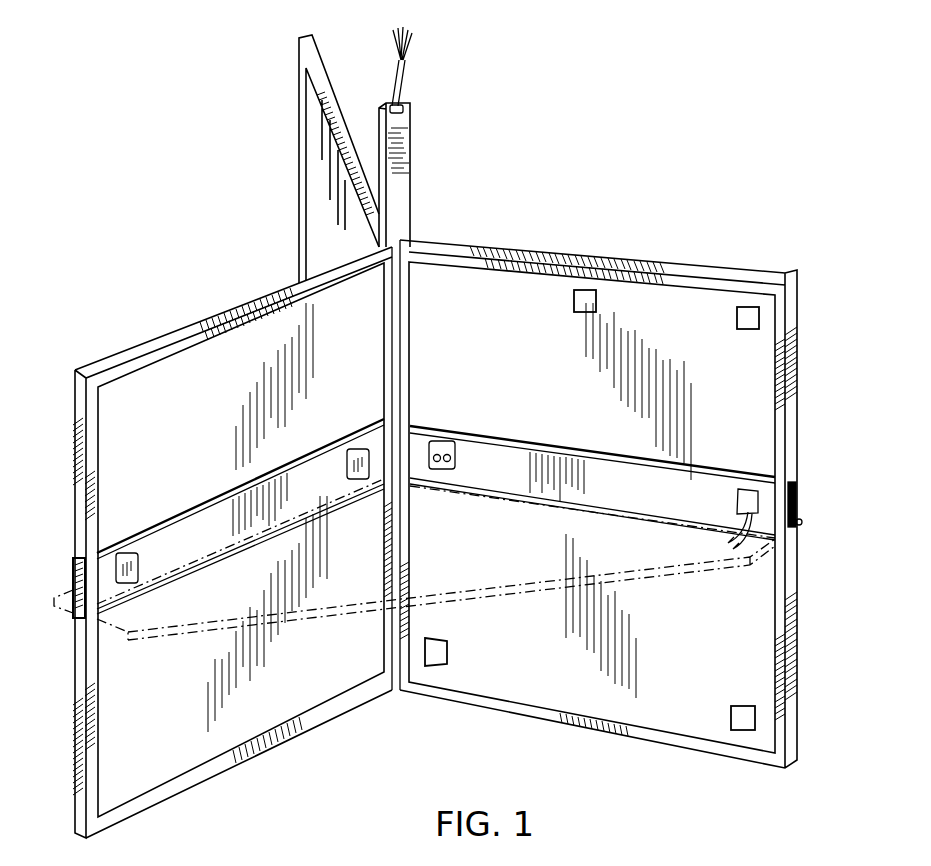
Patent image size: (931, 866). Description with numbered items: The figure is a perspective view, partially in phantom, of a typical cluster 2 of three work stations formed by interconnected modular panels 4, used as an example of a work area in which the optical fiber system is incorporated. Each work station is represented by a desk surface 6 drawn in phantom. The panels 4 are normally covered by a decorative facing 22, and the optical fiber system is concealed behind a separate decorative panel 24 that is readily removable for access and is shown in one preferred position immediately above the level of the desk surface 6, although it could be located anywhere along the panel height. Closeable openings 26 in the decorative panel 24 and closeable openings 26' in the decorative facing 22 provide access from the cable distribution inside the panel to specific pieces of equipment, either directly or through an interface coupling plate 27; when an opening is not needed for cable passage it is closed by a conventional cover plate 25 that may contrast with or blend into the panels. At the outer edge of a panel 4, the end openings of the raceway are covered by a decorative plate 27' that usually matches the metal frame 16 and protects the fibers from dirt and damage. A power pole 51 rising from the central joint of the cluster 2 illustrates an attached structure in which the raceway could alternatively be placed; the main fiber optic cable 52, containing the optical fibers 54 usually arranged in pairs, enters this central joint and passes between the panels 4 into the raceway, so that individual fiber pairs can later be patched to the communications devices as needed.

The cluster 2 is at (517, 240).
The modular panels 4 is at (296, 150).
The desk surfaces 6 is at (60, 590).
The metal frame 16 is at (793, 393).
The decorative facing 22 is at (706, 423).
The decorative panel 24 is at (517, 447).
The cover plate 25 is at (358, 450).
The closeable openings 26 is at (740, 493).
The closeable openings 26' is at (592, 510).
The interface coupling plate 27 is at (460, 431).
The decorative plate 27' is at (59, 618).
The power pole 51 is at (400, 190).
The main fiber optic cable 52 is at (407, 92).
The optical fibers 54 is at (404, 54).